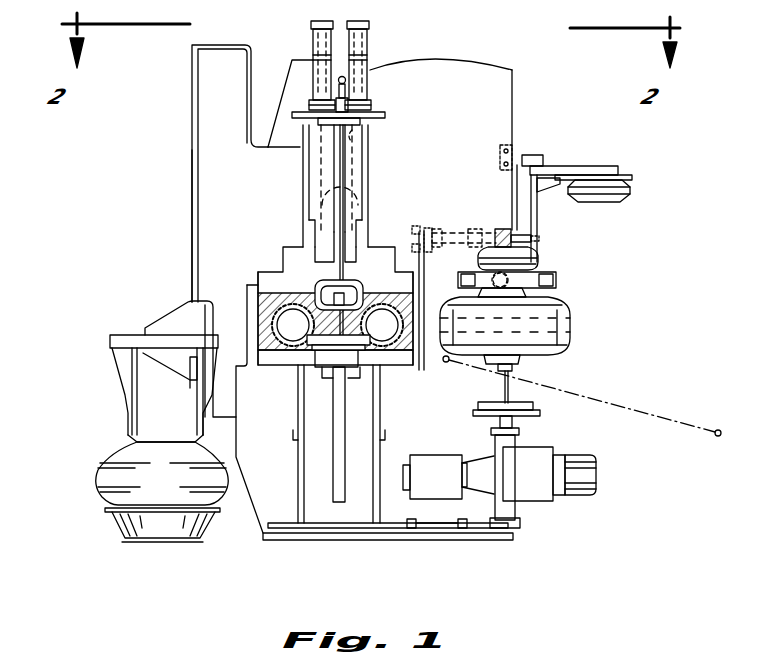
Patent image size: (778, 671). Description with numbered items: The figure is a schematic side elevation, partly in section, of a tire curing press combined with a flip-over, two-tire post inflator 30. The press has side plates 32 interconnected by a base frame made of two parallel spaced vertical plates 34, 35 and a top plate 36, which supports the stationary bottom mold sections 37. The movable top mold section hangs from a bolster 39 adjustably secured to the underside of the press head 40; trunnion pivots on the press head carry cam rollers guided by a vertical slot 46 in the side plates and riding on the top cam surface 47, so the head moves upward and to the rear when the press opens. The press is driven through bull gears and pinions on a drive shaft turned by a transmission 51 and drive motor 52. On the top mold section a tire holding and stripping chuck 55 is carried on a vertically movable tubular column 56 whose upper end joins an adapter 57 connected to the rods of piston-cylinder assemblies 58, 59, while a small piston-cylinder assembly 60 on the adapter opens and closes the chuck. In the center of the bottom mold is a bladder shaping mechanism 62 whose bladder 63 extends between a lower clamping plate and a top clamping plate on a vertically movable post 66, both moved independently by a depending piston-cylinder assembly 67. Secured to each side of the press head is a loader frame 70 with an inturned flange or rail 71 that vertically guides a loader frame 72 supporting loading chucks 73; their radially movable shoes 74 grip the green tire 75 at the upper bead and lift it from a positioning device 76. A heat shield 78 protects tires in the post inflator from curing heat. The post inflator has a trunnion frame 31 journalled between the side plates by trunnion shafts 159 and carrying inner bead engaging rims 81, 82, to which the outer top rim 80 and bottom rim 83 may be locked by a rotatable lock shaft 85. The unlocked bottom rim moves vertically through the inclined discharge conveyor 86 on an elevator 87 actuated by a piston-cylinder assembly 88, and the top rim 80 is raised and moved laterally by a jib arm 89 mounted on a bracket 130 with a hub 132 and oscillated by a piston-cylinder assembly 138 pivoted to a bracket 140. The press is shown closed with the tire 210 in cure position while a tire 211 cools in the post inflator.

The post inflator 30 is at (562, 290).
The trunnion frame 31 is at (557, 278).
The side plates 32 is at (513, 84).
The vertical plate 34 is at (296, 480).
The vertical plate 35 is at (378, 466).
The top plate 36 is at (402, 362).
The bottom mold sections 37 is at (258, 358).
The bolster 39 is at (395, 270).
The press head 40 is at (303, 188).
The vertical slot 46 is at (362, 136).
The top cam surface 47 is at (458, 60).
The transmission 51 is at (434, 460).
The drive motor 52 is at (598, 480).
The tire holding and stripping chuck 55 is at (314, 290).
The tubular column 56 is at (343, 165).
The adapter 57 is at (322, 124).
The piston-cylinder assembly 58 is at (311, 36).
The piston-cylinder assembly 59 is at (369, 36).
The piston-cylinder assembly 60 is at (346, 98).
The bladder shaping mechanism 62 is at (357, 380).
The bladder 63 is at (386, 327).
The post 66 is at (326, 327).
The piston-cylinder assembly 67 is at (330, 458).
The loader frame 70 is at (210, 170).
The inturned flange or rail 71 is at (192, 193).
The loader frame 72 is at (168, 312).
The loading chuck 73 is at (113, 376).
The shoes 74 is at (138, 420).
The green tire 75 is at (96, 487).
The positioning device 76 is at (122, 540).
The heat shield 78 is at (428, 298).
The top bead engaging rim 80 is at (632, 192).
The inner bead engaging rim 81 is at (536, 252).
The inner bead engaging rim 82 is at (540, 293).
The bottom bead engaging rim 83 is at (520, 358).
The lock shaft 85 is at (500, 228).
The inclined discharge conveyor 86 is at (612, 400).
The elevator 87 is at (540, 413).
The piston-cylinder assembly 88 is at (515, 440).
The jib arm 89 is at (600, 166).
The bracket 130 is at (512, 152).
The hub 132 is at (543, 160).
The piston-cylinder assembly 138 is at (455, 229).
The bracket 140 is at (420, 226).
The trunnion shafts 159 is at (472, 316).
The tire 210 is at (257, 305).
The tire 211 is at (572, 331).